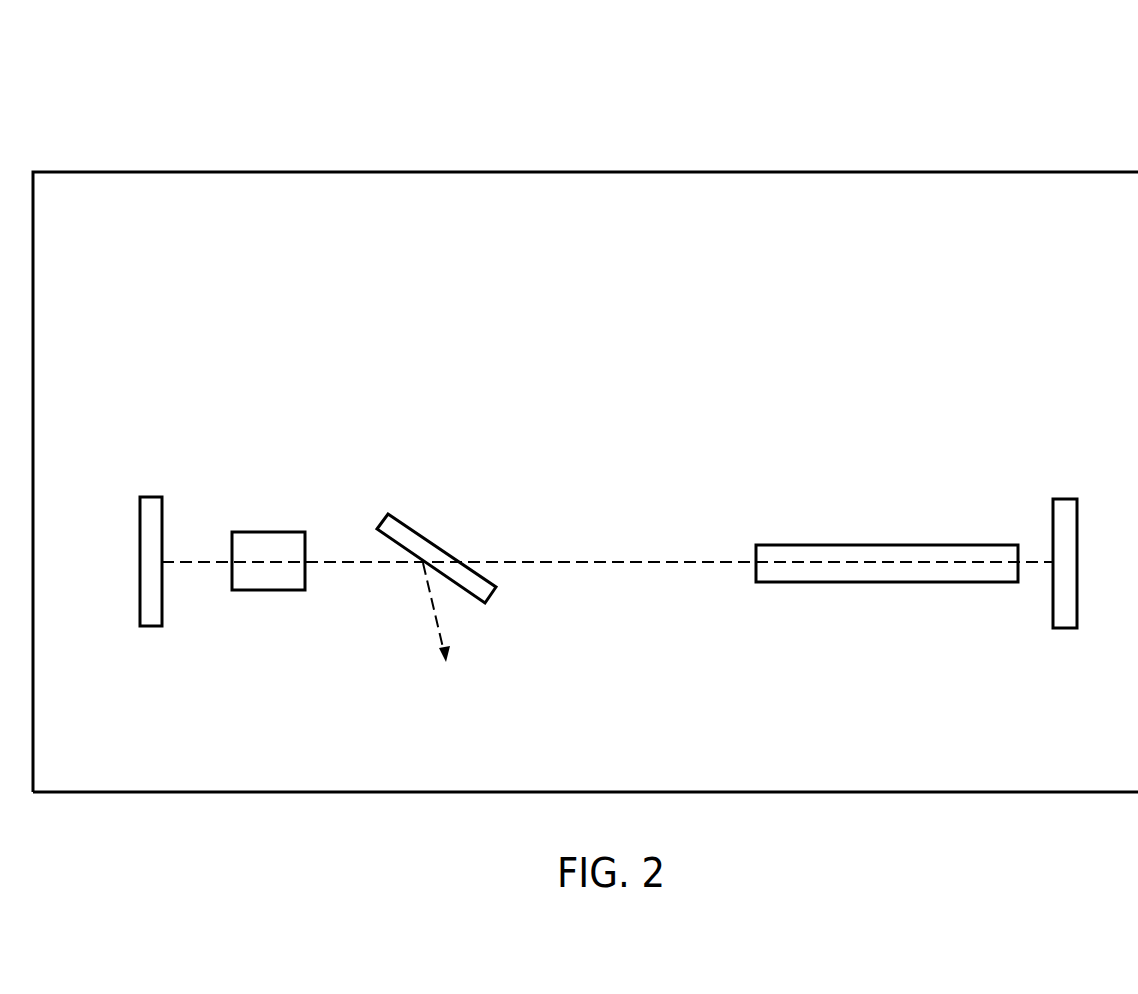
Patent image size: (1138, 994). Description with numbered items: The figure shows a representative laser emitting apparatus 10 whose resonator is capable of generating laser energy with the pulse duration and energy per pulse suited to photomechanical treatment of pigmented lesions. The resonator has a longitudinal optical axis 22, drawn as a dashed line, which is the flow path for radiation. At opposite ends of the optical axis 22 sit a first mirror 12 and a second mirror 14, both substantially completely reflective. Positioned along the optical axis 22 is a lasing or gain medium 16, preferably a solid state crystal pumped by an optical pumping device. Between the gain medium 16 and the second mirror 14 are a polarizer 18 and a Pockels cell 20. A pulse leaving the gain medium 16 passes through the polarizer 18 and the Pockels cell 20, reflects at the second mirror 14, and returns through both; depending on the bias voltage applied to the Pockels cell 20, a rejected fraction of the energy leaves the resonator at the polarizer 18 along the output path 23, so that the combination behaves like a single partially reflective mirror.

The apparatus 10 is at (585, 157).
The first mirror 12 is at (1065, 499).
The second mirror 14 is at (152, 497).
The gain medium 16 is at (828, 545).
The polarizer 18 is at (490, 597).
The Pockels cell 20 is at (281, 532).
The optical axis 22 is at (600, 563).
The output path 23 is at (428, 615).